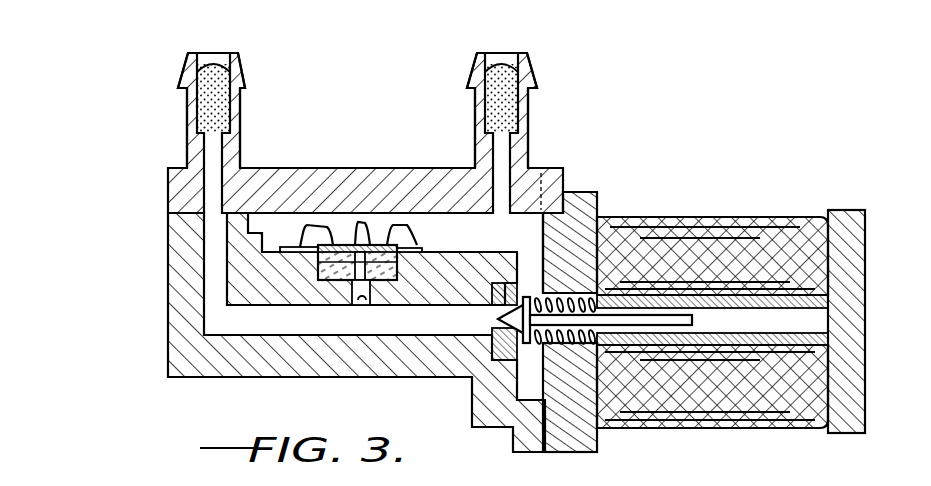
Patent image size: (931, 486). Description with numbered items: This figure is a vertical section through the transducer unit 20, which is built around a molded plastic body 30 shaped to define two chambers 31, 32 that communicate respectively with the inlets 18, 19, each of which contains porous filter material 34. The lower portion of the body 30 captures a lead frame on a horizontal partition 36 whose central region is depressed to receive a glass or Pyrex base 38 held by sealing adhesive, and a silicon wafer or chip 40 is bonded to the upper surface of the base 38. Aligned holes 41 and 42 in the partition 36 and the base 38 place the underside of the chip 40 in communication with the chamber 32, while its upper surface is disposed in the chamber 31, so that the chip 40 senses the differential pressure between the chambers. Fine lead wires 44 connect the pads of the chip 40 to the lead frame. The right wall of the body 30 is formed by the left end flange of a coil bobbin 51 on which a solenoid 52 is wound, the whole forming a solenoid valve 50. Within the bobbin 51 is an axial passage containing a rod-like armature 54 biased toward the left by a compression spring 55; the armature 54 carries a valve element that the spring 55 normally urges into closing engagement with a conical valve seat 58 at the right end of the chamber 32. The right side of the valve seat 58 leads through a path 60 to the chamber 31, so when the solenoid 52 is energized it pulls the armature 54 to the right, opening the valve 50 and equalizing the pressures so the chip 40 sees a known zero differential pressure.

The inlet 18 is at (475, 108).
The inlet 19 is at (187, 110).
The transducer unit 20 is at (451, 252).
The body 30 is at (168, 276).
The chamber 31 is at (455, 222).
The chamber 32 is at (350, 328).
The porous filter material 34 is at (222, 107).
The horizontal partition 36 is at (372, 236).
The base 38 is at (337, 280).
The silicon wafer or chip 40 is at (356, 236).
The hole 41 is at (358, 296).
The hole 42 is at (398, 265).
The lead wires 44 is at (342, 192).
The solenoid valve 50 is at (731, 288).
The coil bobbin 51 is at (581, 192).
The solenoid 52 is at (770, 218).
The armature 54 is at (643, 318).
The compression spring 55 is at (563, 345).
The valve seat 58 is at (486, 338).
The path 60 is at (553, 255).